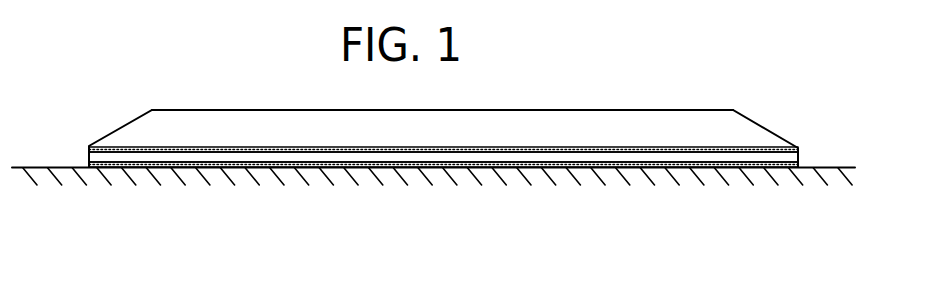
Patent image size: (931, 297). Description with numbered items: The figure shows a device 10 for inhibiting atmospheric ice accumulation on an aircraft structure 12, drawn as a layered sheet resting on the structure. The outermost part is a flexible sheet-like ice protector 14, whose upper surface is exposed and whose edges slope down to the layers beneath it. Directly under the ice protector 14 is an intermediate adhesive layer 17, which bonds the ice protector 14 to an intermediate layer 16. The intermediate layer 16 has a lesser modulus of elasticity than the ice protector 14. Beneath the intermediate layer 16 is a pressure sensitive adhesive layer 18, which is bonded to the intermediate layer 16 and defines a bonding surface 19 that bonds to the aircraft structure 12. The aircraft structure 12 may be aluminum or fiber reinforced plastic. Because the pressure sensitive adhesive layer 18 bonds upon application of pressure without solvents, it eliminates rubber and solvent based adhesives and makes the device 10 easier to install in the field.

The device 10 is at (528, 94).
The aircraft structure 12 is at (60, 167).
The flexible sheet-like ice protector 14 is at (646, 108).
The intermediate layer 16 is at (437, 158).
The intermediate adhesive layer 17 is at (300, 147).
The pressure sensitive adhesive layer 18 is at (260, 168).
The bonding surface 19 is at (627, 168).